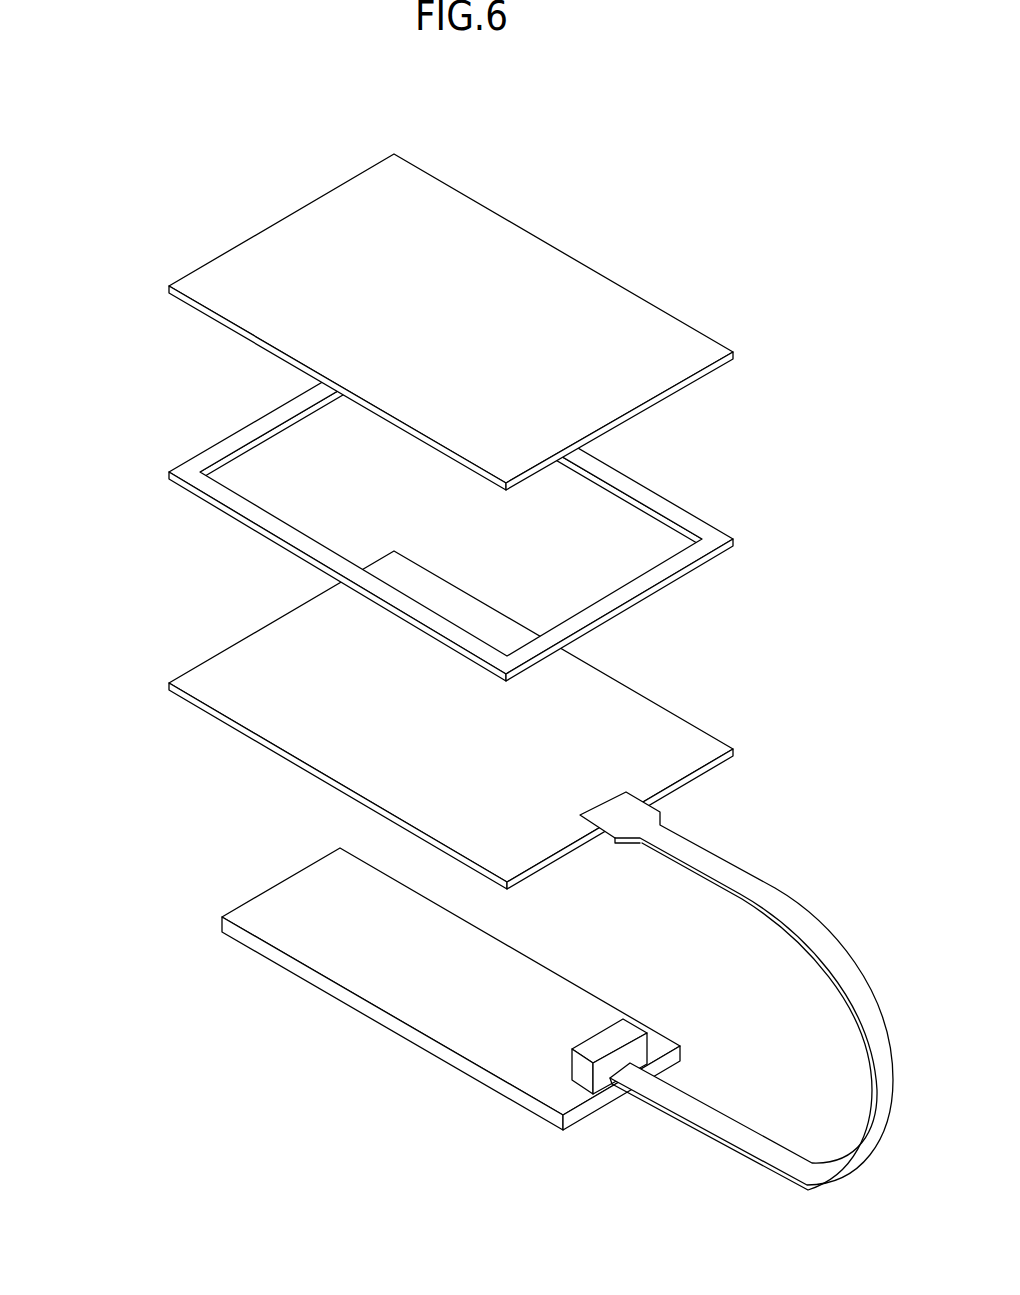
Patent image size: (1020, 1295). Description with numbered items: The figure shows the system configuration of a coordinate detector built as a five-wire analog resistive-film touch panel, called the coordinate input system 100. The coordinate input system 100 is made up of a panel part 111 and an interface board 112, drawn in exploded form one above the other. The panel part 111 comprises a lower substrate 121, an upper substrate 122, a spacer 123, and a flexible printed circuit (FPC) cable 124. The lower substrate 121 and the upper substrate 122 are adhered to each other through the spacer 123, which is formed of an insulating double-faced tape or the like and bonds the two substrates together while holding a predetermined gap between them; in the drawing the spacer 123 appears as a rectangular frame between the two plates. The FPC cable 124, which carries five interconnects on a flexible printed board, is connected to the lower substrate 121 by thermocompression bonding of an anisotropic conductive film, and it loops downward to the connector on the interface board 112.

The coordinate input system 100 is at (148, 154).
The panel part 111 is at (105, 310).
The interface board 112 is at (238, 900).
The lower substrate 121 is at (192, 663).
The upper substrate 122 is at (192, 313).
The spacer 123 is at (192, 450).
The flexible printed circuit (FPC) cable 124 is at (825, 969).